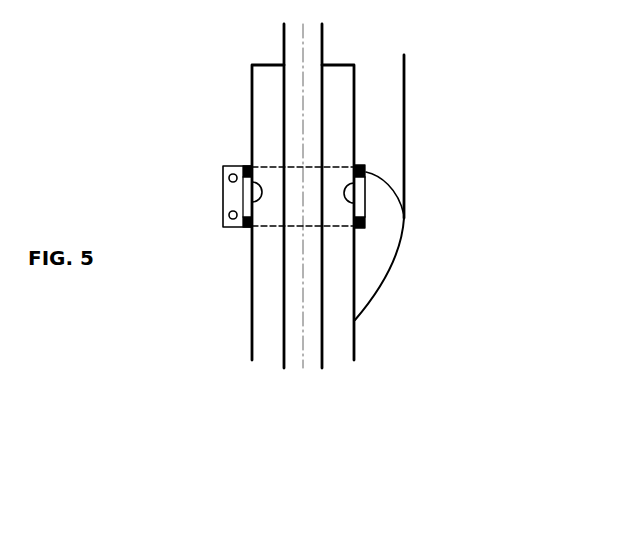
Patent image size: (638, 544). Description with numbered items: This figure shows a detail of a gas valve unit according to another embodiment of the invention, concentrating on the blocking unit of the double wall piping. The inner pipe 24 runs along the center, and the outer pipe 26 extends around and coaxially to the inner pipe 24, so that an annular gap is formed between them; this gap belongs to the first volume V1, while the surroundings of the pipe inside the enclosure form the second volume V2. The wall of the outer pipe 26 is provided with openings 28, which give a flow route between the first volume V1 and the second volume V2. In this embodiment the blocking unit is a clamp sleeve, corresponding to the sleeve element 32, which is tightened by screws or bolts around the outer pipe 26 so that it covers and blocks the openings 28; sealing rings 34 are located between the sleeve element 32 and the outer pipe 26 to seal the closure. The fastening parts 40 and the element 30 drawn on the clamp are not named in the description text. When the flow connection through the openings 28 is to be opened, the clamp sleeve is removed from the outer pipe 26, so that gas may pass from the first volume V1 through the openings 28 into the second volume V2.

The inner pipe 24 is at (325, 353).
The outer pipe 26 is at (357, 343).
The openings 28 is at (366, 210).
The hose line 30 is at (366, 171).
The sleeve element 32 is at (368, 215).
The sealing rings 34 is at (366, 222).
The bracket 40 is at (227, 214).
The first volume V1 is at (268, 323).
The second volume V2 is at (203, 103).